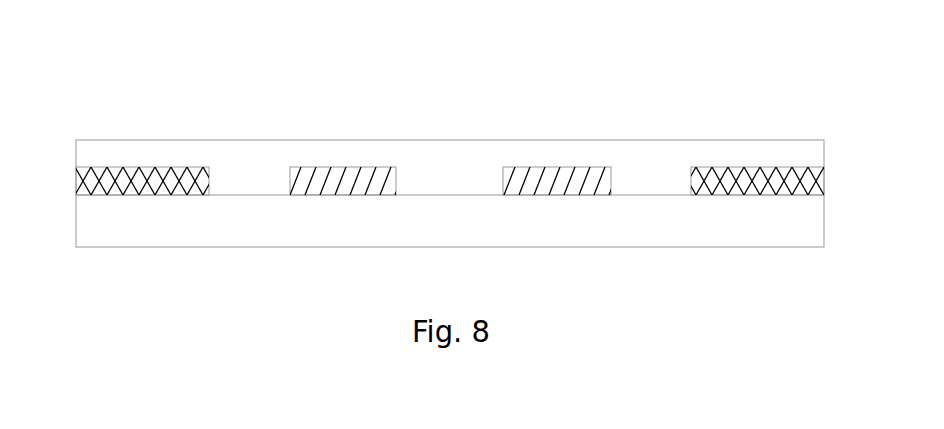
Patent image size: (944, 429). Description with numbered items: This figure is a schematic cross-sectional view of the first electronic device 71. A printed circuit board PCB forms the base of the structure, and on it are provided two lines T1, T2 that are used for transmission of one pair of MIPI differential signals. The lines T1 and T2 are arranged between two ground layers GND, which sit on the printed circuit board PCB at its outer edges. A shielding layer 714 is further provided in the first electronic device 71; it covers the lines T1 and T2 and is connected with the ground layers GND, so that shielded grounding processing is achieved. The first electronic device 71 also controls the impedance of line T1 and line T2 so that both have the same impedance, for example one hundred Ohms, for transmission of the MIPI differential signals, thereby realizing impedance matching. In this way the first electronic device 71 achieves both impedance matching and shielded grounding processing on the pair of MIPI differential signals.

The first electronic device 71 is at (449, 145).
The shielding layer 714 is at (557, 140).
The ground layers GND is at (187, 183).
The line T1 is at (386, 184).
The line T2 is at (581, 185).
The printed circuit board PCB is at (450, 214).